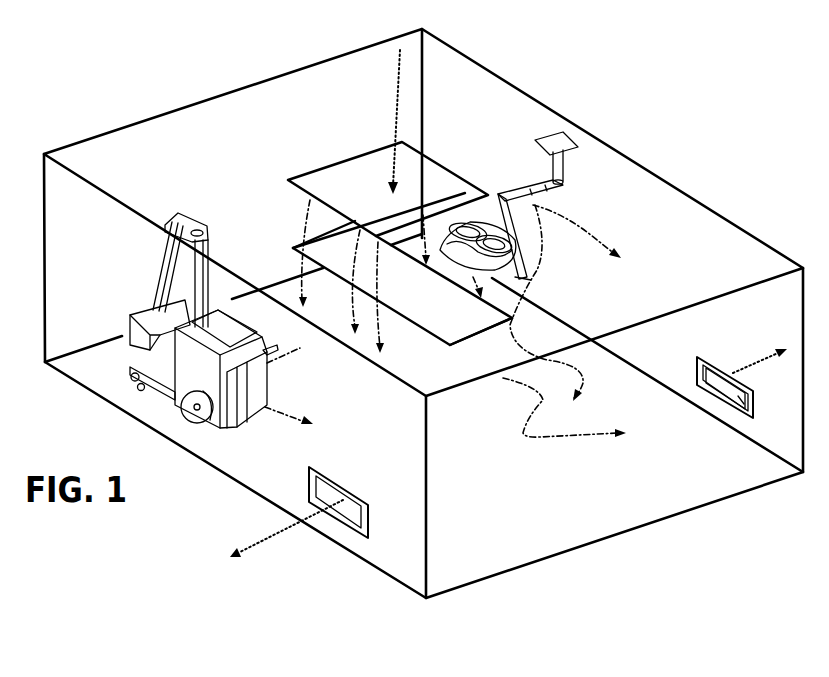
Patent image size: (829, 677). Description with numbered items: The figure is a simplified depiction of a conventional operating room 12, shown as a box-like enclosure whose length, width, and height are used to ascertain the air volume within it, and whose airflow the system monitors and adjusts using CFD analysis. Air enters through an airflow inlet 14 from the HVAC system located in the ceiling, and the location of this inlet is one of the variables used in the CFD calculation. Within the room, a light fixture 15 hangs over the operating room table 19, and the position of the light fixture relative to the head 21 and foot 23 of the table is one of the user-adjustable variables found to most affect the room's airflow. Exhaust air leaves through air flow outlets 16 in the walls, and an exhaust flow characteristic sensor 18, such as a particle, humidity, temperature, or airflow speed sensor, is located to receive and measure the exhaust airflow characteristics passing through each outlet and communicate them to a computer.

The operating room 12 is at (640, 165).
The airflow inlet 14 is at (373, 190).
The light fixture 15 is at (498, 200).
The air flow outlet 16 is at (353, 532).
The exhaust flow characteristic sensor 18 is at (735, 405).
The operating room table 19 is at (452, 318).
The head 21 is at (510, 318).
The foot 23 is at (293, 247).